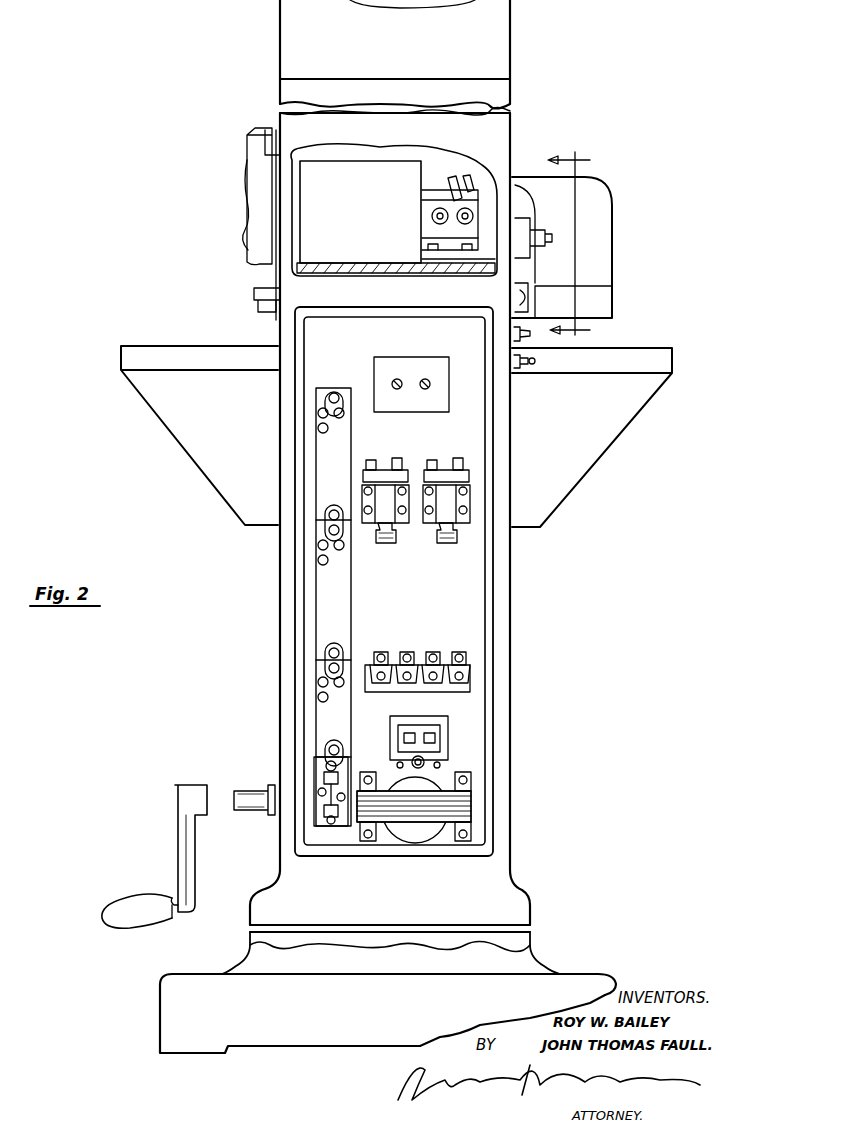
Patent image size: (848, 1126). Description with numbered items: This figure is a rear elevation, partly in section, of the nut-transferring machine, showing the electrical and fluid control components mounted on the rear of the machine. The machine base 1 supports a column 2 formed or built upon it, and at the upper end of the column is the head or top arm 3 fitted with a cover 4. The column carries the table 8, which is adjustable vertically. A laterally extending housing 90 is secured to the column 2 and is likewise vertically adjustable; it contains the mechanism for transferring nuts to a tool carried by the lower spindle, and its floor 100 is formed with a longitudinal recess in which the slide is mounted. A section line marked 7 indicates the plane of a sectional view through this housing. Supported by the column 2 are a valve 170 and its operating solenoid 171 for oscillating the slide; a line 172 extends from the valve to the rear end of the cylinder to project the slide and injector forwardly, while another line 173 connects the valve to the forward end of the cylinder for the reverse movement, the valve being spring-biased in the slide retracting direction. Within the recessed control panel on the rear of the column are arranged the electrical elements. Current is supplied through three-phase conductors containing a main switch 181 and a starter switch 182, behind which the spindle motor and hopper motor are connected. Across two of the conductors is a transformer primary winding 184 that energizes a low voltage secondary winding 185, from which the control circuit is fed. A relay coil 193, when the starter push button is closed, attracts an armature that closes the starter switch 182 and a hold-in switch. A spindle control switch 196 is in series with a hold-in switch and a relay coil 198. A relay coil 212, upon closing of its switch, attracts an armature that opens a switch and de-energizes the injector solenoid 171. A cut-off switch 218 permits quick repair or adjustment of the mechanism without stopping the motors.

The machine base 1 is at (168, 1012).
The column 2 is at (507, 858).
The head or top arm 3 is at (498, 92).
The cover 4 is at (500, 33).
The section line 7 is at (575, 243).
The table 8 is at (672, 360).
The laterally extending housing 90 is at (612, 233).
The floor of the housing 100 is at (596, 305).
The valve 170 is at (484, 174).
The operating solenoid 171 is at (375, 172).
The line 172 is at (446, 182).
The line 173 is at (458, 192).
The main switch 181 is at (404, 372).
The starter switch 182 is at (462, 655).
The transformer primary winding 184 is at (471, 808).
The low voltage secondary winding 185 is at (414, 806).
The relay coil 193 is at (444, 730).
The spindle control switch 196 is at (524, 330).
The relay coil 198 is at (491, 483).
The relay coil 212 is at (385, 500).
The cut-off switch 218 is at (536, 360).